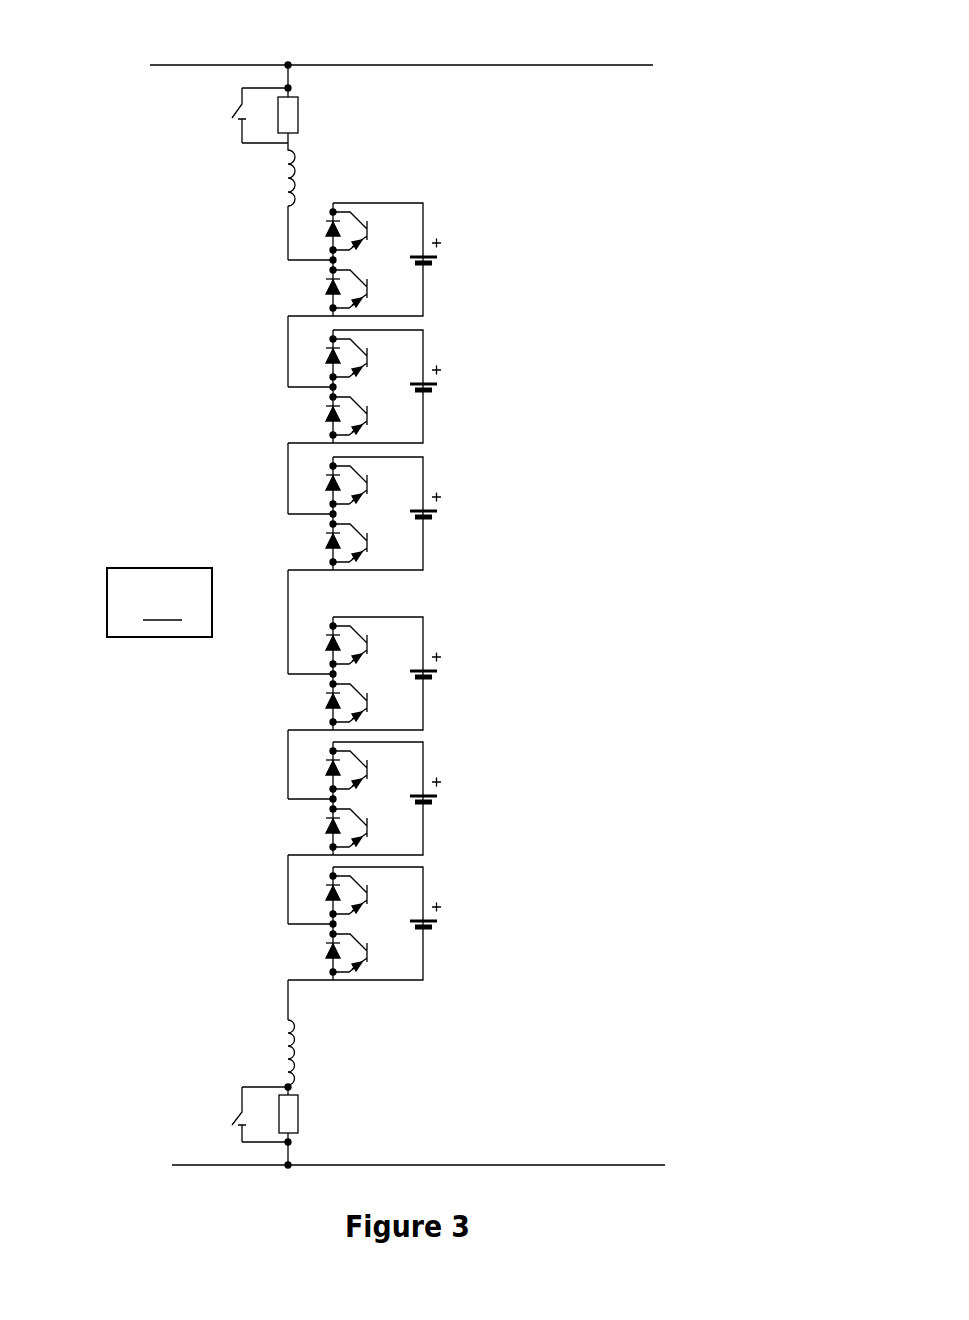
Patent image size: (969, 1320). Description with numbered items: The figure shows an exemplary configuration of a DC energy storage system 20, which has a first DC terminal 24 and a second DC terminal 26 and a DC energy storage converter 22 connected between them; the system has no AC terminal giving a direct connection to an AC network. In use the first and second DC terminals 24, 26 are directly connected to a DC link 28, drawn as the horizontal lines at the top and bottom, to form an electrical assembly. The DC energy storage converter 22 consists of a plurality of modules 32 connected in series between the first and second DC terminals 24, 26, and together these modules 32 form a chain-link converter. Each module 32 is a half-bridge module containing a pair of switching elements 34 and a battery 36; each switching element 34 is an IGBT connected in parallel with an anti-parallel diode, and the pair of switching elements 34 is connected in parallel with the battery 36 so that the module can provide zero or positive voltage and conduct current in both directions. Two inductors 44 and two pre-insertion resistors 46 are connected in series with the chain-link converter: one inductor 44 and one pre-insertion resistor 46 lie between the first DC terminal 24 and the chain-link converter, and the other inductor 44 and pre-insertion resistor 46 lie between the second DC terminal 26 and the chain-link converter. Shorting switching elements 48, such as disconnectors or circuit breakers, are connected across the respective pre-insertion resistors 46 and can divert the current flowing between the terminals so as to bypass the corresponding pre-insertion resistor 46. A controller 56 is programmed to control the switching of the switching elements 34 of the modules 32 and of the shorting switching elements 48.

The DC energy storage system 20 is at (572, 613).
The DC energy storage converter 22 is at (262, 468).
The first DC terminal 24 is at (286, 70).
The second DC terminal 26 is at (286, 1163).
The DC link 28 is at (608, 76).
The module 32 is at (415, 306).
The switching element 34 is at (338, 263).
The battery 36 is at (440, 262).
The inductor 44 is at (282, 182).
The pre-insertion resistor 46 is at (293, 116).
The shorting switching element 48 is at (232, 118).
The controller 56 is at (282, 605).